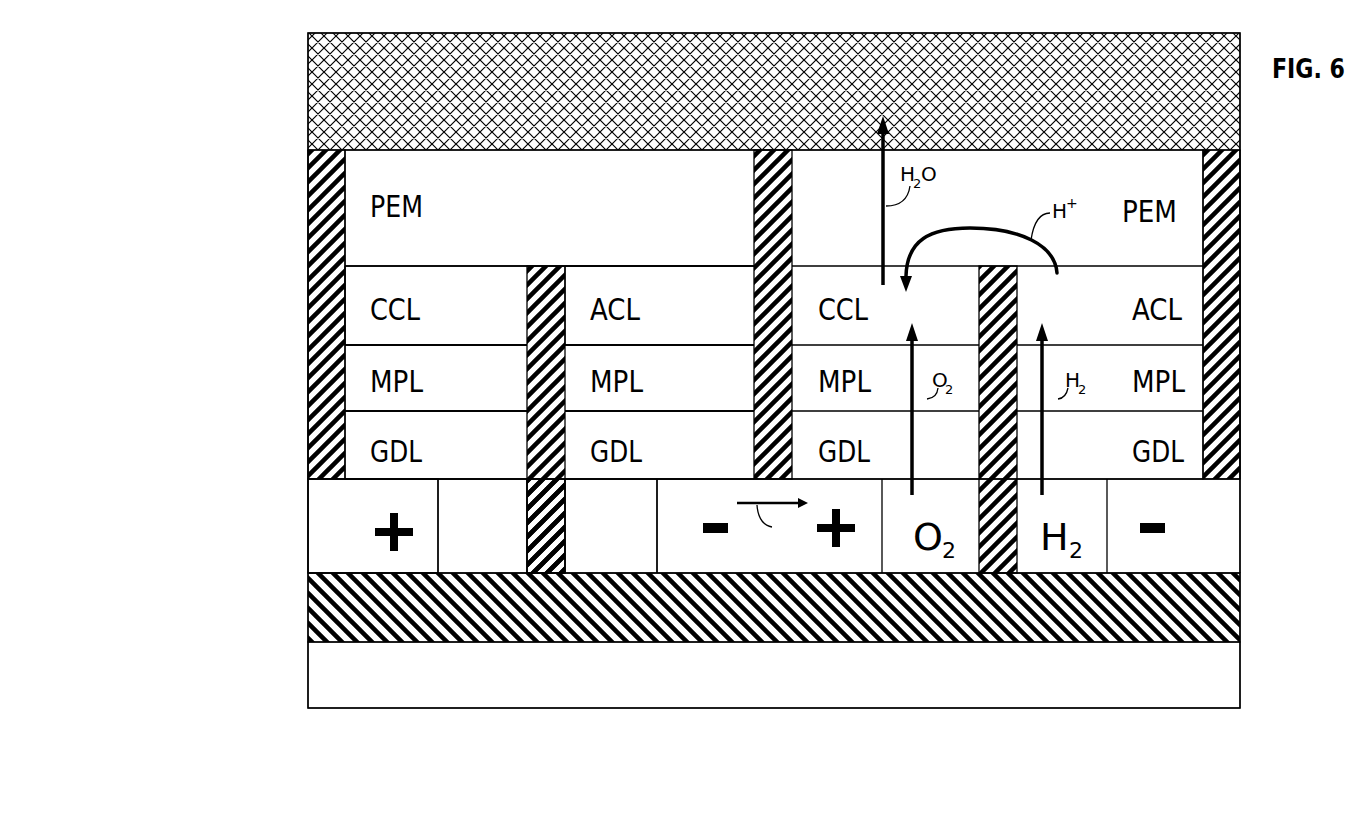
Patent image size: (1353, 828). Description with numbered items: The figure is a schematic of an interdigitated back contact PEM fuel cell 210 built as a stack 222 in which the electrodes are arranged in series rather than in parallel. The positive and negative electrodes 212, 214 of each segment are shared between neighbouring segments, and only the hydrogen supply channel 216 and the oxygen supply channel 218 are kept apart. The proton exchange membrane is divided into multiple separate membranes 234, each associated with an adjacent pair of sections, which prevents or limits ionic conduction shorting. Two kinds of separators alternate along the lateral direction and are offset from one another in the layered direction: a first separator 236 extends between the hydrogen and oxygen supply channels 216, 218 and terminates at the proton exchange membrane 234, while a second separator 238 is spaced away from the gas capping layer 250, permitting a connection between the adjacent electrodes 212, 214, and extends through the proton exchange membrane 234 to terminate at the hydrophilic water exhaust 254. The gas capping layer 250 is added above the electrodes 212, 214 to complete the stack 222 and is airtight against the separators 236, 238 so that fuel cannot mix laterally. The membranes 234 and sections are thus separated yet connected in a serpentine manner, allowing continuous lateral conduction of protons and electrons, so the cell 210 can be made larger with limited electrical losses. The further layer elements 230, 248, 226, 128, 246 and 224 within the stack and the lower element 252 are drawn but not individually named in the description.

The fuel cell 210 is at (106, 165).
The hydrophilic water exhaust 254 is at (308, 99).
The proton exchange membrane 234 is at (345, 207).
The second separator 238 is at (308, 333).
The cathode catalyst layer 230 is at (345, 293).
The microporous layer 248 is at (345, 375).
The gas diffusion layer 226 is at (345, 442).
The anode catalyst layer 128 is at (605, 265).
The microporous layer 246 is at (665, 345).
The gas diffusion layer 224 is at (735, 411).
The stack 222 is at (1260, 148).
The gas capping layer 250 is at (308, 609).
The end plate 252 is at (308, 678).
The oxygen supply channel 218 is at (377, 574).
The negative electrode 214 is at (472, 574).
The first separator 236 is at (538, 574).
The positive electrode 212 is at (612, 574).
The hydrogen supply channel 216 is at (703, 574).